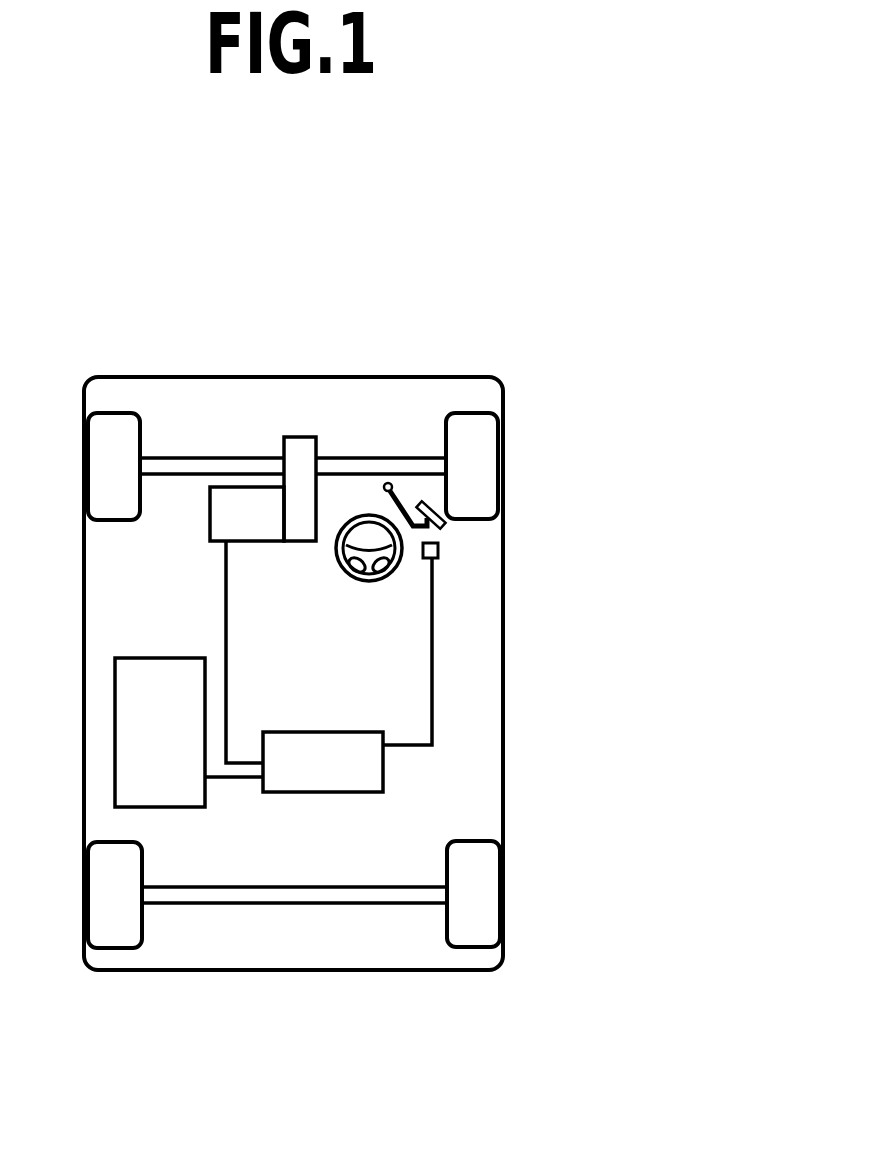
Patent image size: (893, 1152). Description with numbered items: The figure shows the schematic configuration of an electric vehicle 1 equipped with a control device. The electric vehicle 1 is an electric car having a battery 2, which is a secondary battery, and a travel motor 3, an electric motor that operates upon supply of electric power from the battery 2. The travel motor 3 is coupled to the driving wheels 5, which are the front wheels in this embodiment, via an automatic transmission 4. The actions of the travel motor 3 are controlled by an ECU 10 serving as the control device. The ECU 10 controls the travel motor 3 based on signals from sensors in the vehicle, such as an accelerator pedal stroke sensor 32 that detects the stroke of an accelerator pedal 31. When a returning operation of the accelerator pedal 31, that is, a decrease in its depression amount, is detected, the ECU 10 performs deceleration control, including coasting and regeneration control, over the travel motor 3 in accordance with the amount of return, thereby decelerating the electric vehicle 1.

The electric vehicle 1 is at (525, 233).
The battery 2 is at (123, 683).
The travel motor 3 is at (252, 497).
The automatic transmission 4 is at (301, 452).
The driving wheels 5 is at (100, 437).
The ECU 10 is at (375, 762).
The accelerator pedal 31 is at (418, 498).
The accelerator pedal stroke sensor 32 is at (439, 550).